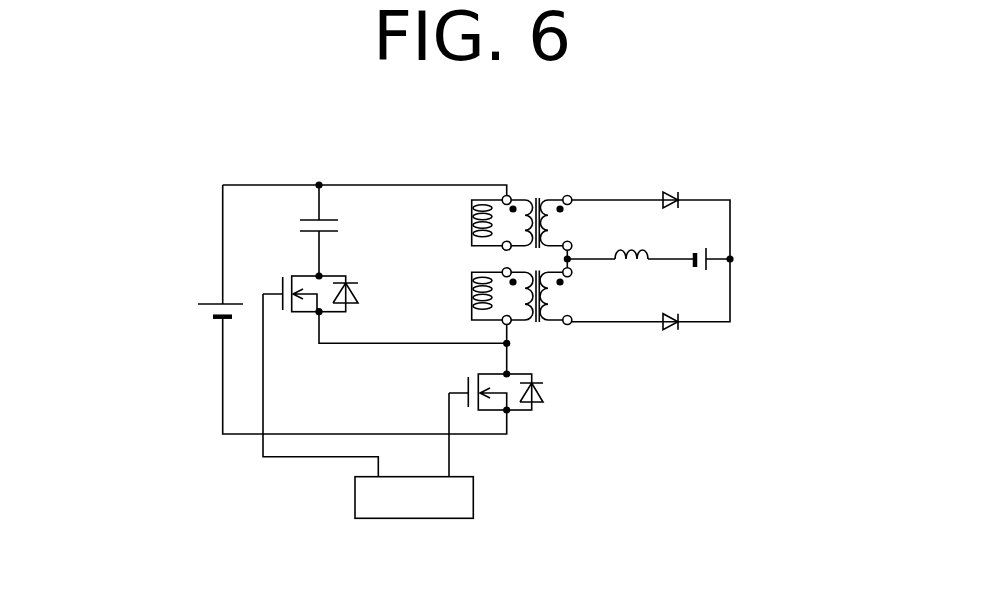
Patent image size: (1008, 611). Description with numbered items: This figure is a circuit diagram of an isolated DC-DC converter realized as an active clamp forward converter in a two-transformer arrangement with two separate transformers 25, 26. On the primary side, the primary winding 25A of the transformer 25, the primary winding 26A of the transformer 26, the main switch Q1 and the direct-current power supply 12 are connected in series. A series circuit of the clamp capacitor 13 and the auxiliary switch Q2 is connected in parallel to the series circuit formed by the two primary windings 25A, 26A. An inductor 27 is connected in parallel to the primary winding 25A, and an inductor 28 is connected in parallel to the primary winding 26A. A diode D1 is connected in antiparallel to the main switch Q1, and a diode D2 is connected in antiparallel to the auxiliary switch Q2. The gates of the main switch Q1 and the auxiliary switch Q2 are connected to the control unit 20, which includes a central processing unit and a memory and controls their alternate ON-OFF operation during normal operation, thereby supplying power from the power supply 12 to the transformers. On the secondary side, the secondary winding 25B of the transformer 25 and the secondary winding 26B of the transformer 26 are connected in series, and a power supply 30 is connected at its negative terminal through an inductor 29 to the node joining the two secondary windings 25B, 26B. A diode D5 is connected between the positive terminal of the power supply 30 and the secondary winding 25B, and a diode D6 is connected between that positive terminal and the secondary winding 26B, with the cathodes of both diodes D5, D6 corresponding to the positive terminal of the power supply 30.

The direct-current power supply 12 is at (220, 300).
The clamp capacitor 13 is at (330, 221).
The control unit 20 is at (473, 498).
The transformer 25 is at (511, 186).
The primary winding of transformer 25 25A is at (476, 197).
The secondary winding of transformer 25 25B is at (553, 197).
The transformer 26 is at (519, 322).
The primary winding of transformer 26 26A is at (488, 319).
The secondary winding of transformer 26 26B is at (552, 325).
The inductor 27 is at (472, 218).
The inductor 28 is at (472, 293).
The inductor 29 is at (645, 250).
The power supply 30 is at (705, 252).
The diode D1 is at (546, 392).
The diode D2 is at (375, 282).
The diode D5 is at (668, 192).
The diode D6 is at (668, 330).
The main switch Q1 is at (491, 375).
The auxiliary switch Q2 is at (307, 313).